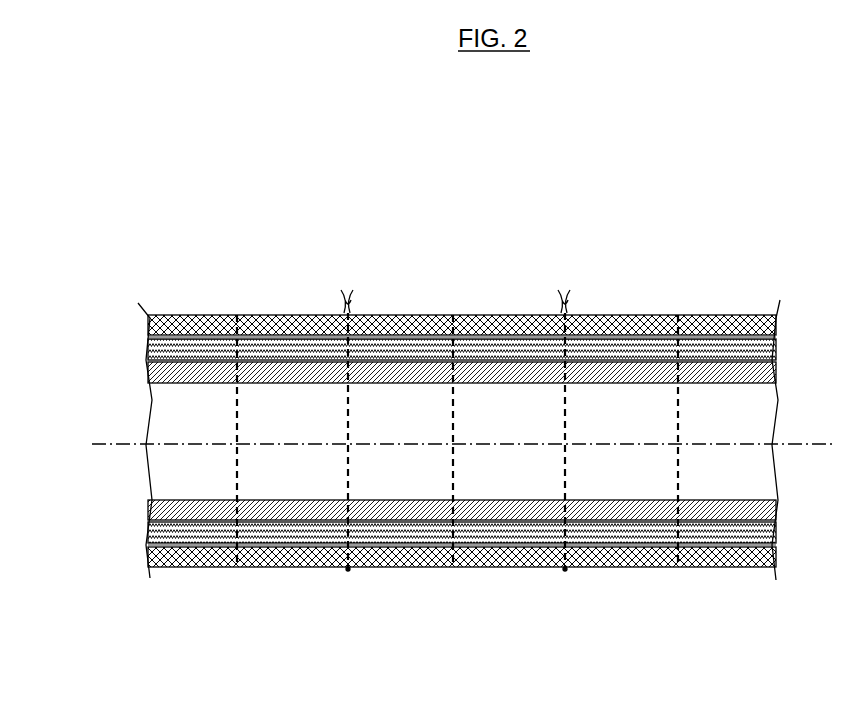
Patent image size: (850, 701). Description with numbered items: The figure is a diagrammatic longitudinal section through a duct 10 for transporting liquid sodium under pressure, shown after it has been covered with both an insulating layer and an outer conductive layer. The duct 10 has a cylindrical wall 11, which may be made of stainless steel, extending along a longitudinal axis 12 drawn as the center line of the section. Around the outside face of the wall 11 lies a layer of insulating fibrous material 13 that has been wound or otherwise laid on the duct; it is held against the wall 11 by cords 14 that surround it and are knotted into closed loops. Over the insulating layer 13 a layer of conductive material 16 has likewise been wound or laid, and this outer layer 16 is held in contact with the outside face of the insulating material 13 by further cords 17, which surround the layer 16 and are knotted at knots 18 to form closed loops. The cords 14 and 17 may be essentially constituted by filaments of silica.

The duct 10 is at (512, 419).
The cylindrical wall 11 is at (776, 372).
The longitudinal axis 12 is at (100, 447).
The layer of insulating fibrous material 13 is at (776, 350).
The cords 14 is at (233, 462).
The layer of conductive material 16 is at (776, 324).
The cords 17 is at (346, 464).
The knots 18 is at (360, 302).